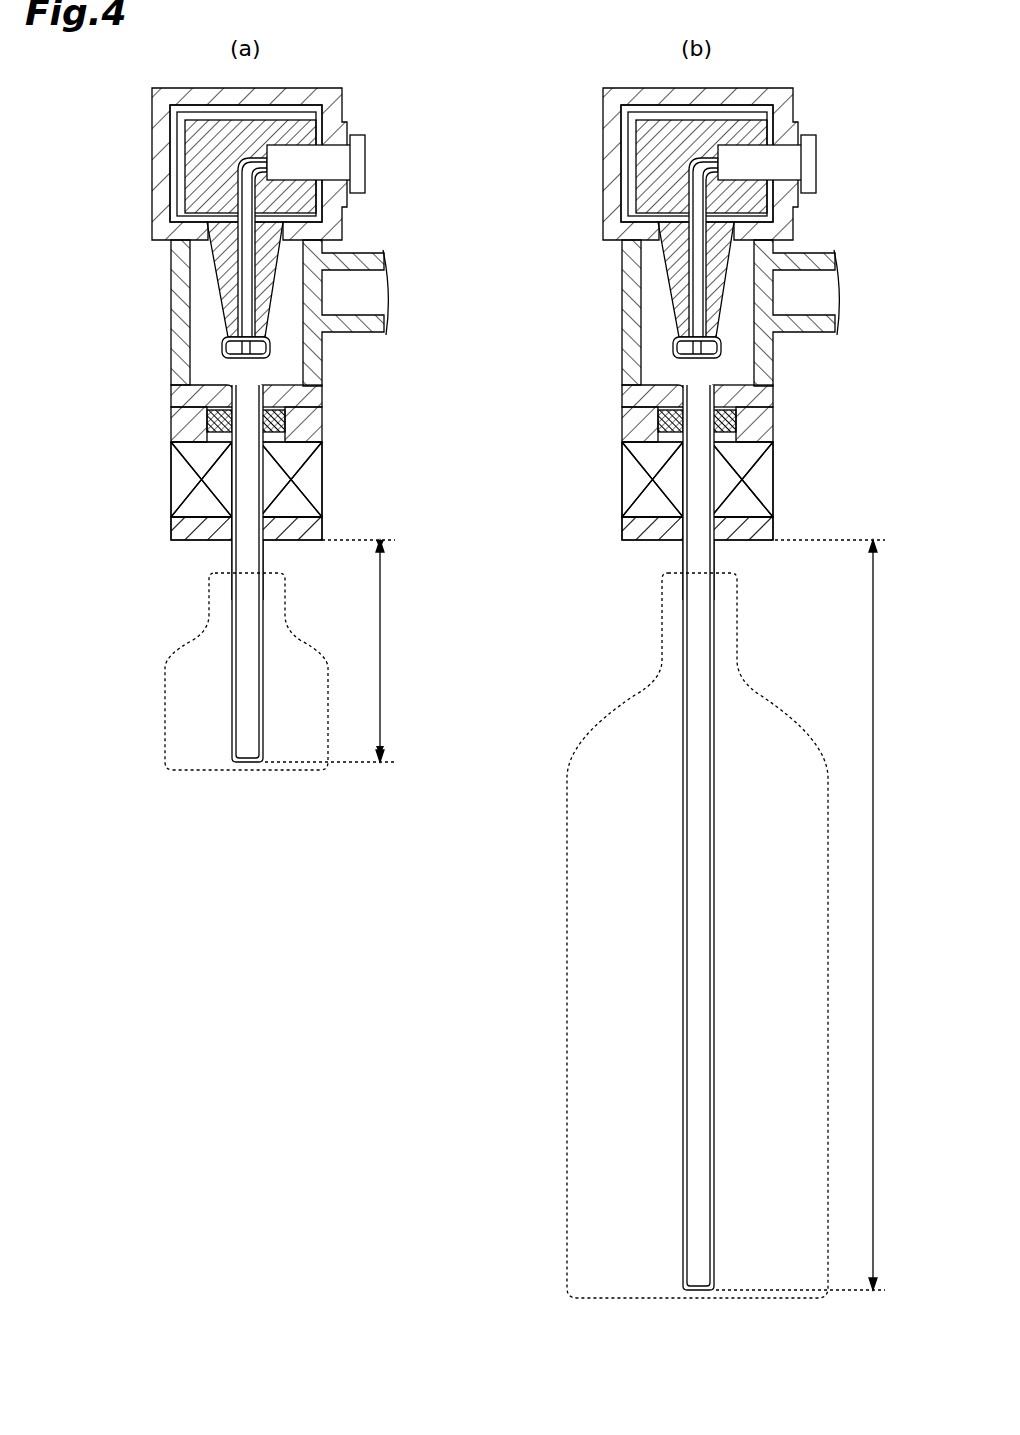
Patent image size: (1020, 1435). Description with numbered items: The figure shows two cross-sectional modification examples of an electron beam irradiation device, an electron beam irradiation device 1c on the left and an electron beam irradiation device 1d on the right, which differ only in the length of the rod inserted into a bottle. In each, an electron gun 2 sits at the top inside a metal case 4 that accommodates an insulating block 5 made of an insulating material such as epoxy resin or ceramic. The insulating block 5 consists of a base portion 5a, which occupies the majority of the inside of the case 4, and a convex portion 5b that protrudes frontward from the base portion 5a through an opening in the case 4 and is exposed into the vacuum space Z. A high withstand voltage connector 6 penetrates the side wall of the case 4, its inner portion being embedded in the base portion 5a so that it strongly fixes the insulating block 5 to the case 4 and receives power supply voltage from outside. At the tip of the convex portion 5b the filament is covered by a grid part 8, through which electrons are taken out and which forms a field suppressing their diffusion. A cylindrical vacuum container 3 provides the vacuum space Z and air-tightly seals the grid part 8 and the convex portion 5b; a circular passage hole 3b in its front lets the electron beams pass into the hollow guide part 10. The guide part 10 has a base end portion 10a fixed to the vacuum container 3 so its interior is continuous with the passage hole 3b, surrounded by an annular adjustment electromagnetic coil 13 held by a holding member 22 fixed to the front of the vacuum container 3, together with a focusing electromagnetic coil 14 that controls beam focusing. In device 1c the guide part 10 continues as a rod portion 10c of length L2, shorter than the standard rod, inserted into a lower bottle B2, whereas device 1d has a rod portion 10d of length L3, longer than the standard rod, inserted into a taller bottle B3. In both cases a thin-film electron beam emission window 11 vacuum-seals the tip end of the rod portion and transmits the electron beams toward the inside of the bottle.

The electron beam irradiation device 1c is at (131, 84).
The electron beam irradiation device 1d is at (582, 84).
The electron gun 2 is at (218, 310).
The vacuum container 3 is at (166, 345).
The passage hole 3b is at (215, 386).
The case 4 is at (147, 136).
The insulating block 5 is at (416, 221).
The base portion 5a is at (200, 173).
The convex portion 5b is at (218, 257).
The connector 6 is at (367, 133).
The grid part 8 is at (272, 350).
The vacuum space Z is at (301, 306).
The guide part 10 is at (403, 521).
The base end portion 10a is at (197, 485).
The rod portion 10c is at (230, 562).
The rod portion 10d is at (681, 562).
The electron beam emission window 11 is at (242, 773).
The adjustment electromagnetic coil 13 is at (287, 421).
The focusing electromagnetic coil 14 is at (318, 480).
The holding member 22 is at (195, 420).
The bottle B2 is at (362, 577).
The bottle B3 is at (832, 641).
The length L2 is at (337, 651).
The length L3 is at (808, 915).